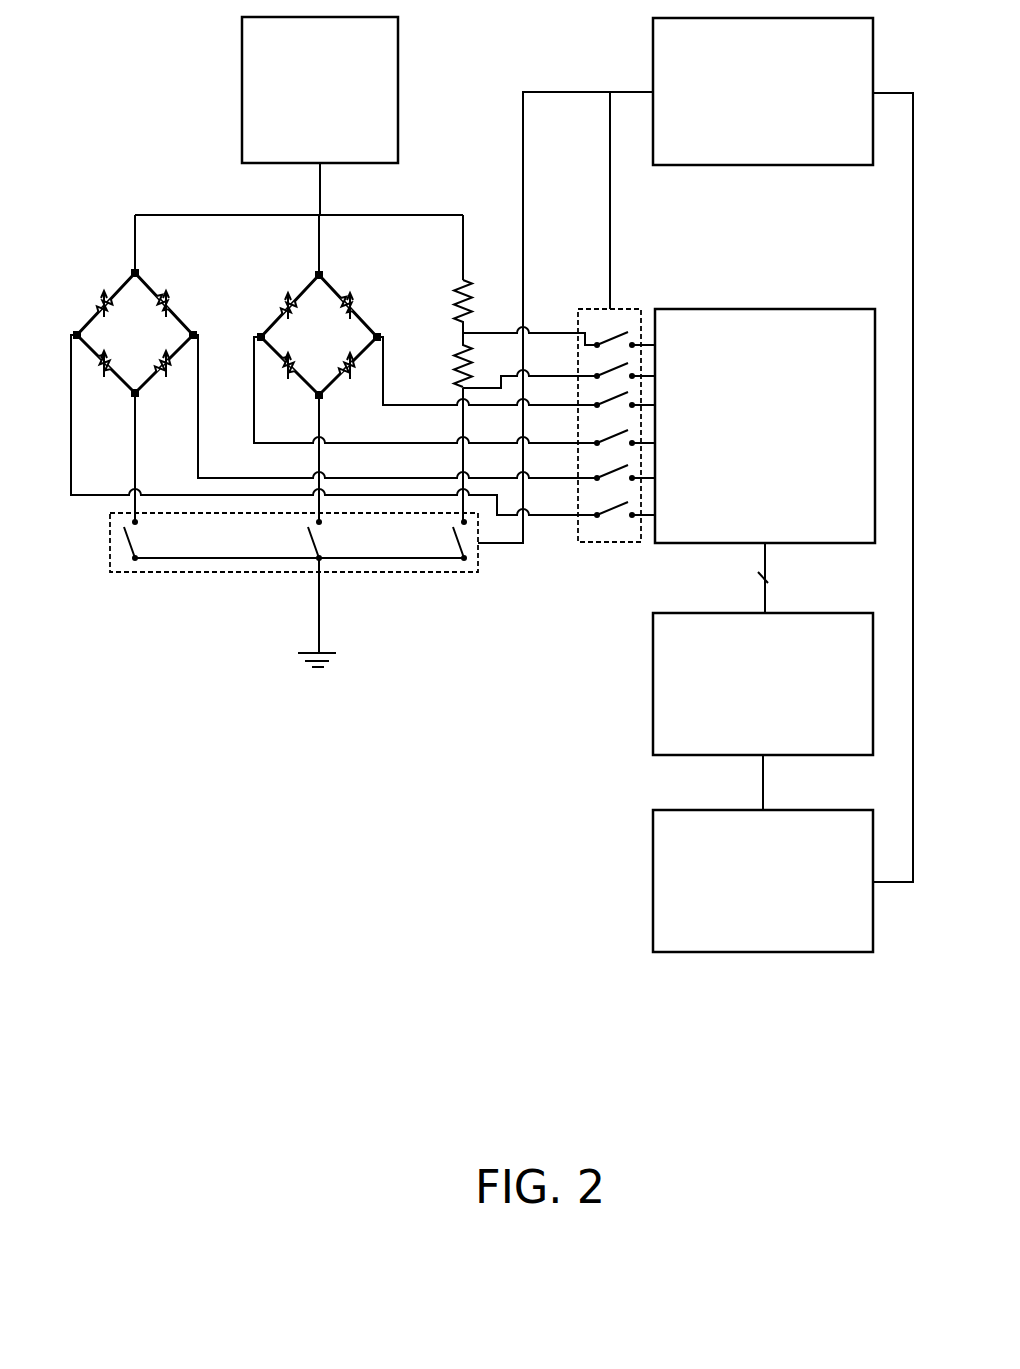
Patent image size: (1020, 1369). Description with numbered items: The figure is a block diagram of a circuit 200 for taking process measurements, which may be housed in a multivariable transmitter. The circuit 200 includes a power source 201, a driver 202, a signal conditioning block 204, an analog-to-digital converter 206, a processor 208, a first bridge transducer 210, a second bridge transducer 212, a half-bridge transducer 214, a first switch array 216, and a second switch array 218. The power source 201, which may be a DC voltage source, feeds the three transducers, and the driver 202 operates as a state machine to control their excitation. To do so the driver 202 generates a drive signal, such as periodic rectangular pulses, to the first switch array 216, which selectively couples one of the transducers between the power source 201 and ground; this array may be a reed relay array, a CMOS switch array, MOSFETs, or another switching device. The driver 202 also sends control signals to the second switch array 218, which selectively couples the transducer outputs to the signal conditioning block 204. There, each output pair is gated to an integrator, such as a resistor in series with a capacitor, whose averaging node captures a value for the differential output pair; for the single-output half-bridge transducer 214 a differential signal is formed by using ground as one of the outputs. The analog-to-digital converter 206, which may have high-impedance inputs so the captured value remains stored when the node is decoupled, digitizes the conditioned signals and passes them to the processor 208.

The circuit 200 is at (196, 824).
The power source 201 is at (242, 33).
The driver 202 is at (653, 35).
The signal conditioning block 204 is at (806, 309).
The analog-to-digital converter 206 is at (668, 613).
The processor 208 is at (673, 810).
The first bridge transducer 210 is at (100, 312).
The second bridge transducer 212 is at (284, 312).
The half-bridge transducer 214 is at (455, 308).
The first switch array 216 is at (110, 541).
The second switch array 218 is at (608, 305).